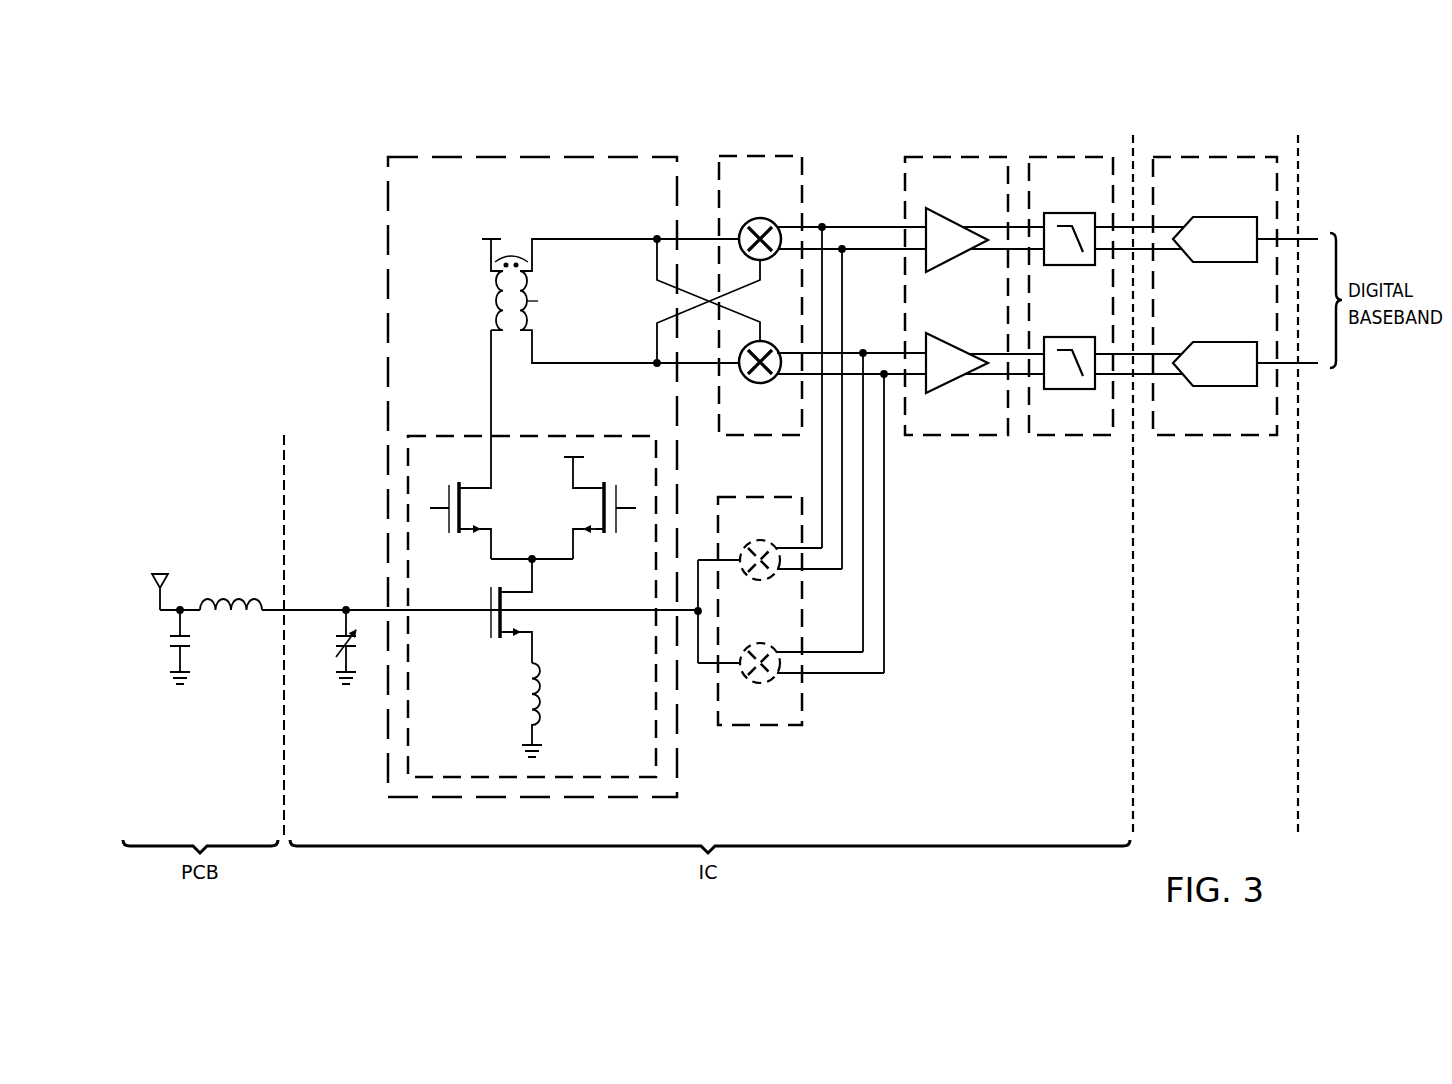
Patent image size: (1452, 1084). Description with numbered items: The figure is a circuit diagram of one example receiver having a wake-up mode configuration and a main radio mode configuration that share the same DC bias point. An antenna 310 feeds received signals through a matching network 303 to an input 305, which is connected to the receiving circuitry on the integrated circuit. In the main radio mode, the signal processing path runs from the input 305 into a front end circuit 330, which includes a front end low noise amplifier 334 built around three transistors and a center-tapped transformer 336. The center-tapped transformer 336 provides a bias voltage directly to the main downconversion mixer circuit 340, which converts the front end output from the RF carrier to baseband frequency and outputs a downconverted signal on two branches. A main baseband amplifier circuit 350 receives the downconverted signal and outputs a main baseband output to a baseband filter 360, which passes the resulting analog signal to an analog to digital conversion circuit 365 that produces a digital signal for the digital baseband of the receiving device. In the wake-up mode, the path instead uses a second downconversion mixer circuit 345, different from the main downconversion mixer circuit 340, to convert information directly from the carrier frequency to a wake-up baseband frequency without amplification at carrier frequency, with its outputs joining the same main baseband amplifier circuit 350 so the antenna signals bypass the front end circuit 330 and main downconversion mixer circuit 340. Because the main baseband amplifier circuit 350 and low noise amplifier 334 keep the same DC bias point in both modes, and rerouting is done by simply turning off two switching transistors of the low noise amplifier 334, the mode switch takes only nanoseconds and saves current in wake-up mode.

The matching network capacitor 303 is at (220, 670).
The input 305 is at (323, 609).
The antenna 310 is at (156, 571).
The front end circuit 330 is at (506, 153).
The front end low noise amplifier 334 is at (458, 435).
The center-tapped transformer 336 is at (498, 334).
The main downconversion mixer circuit 340 is at (774, 153).
The second downconversion mixer circuit 345 is at (774, 731).
The main baseband amplifier circuit 350 is at (957, 153).
The baseband filter 360 is at (1082, 153).
The analog to digital conversion circuit 365 is at (1229, 153).